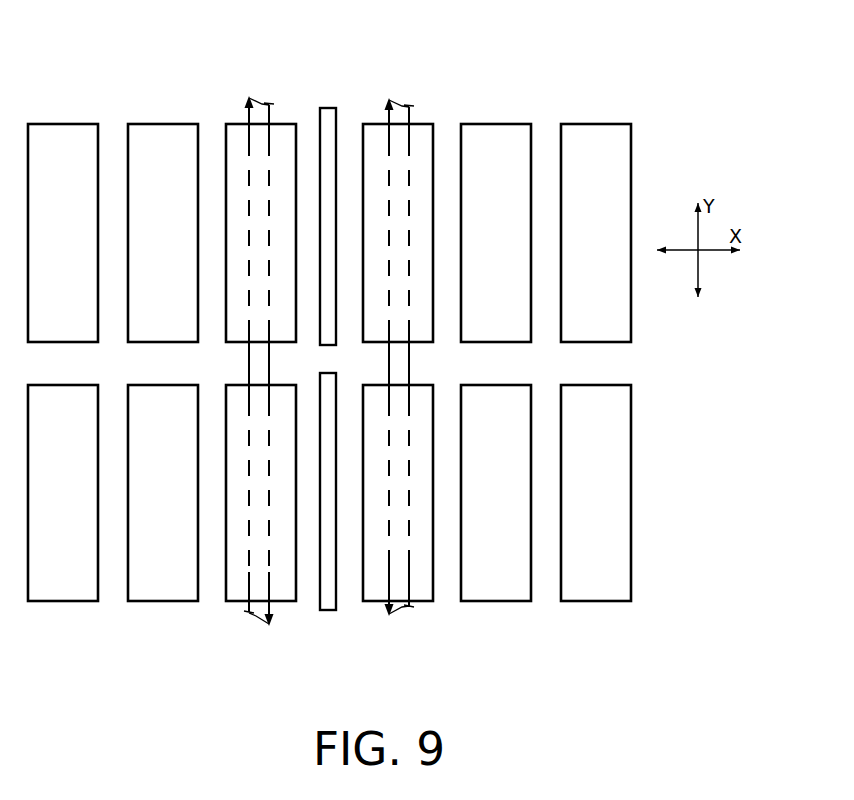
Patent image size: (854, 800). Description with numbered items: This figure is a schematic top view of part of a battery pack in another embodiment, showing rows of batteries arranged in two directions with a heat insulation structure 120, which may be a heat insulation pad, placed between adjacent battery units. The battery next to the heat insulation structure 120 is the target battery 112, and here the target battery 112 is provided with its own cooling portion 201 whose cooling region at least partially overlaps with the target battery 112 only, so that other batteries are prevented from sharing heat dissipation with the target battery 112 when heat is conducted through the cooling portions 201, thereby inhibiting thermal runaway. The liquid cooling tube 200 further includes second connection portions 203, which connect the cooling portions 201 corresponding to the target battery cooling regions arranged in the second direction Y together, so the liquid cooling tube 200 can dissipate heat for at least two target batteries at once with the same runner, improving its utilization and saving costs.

The target battery 112 is at (242, 603).
The heat insulation structure 120 is at (327, 604).
The liquid cooling tube 200 is at (80, 30).
The cooling portion 201 is at (406, 158).
The second connection portion 203 is at (397, 363).